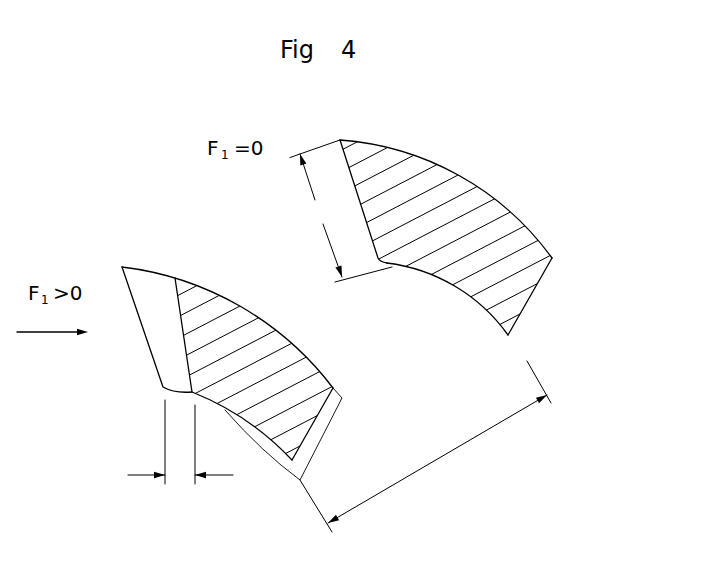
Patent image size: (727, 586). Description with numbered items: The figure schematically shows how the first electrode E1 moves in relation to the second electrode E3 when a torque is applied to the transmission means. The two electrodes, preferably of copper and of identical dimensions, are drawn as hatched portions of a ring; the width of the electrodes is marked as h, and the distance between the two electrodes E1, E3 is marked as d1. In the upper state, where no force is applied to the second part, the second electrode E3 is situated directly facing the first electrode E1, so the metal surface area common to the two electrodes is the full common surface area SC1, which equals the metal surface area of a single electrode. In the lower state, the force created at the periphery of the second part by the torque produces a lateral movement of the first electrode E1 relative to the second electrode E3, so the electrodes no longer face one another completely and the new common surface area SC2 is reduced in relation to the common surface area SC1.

The first electrode E1 is at (533, 239).
The second electrode E3 is at (445, 175).
The metal surface area common to the two electrodes SC1 is at (445, 235).
The new surface area common between the first and second electrode SC2 is at (236, 354).
The width of the first and second electrodes h is at (341, 211).
The distance between the two electrodes d1 is at (425, 446).